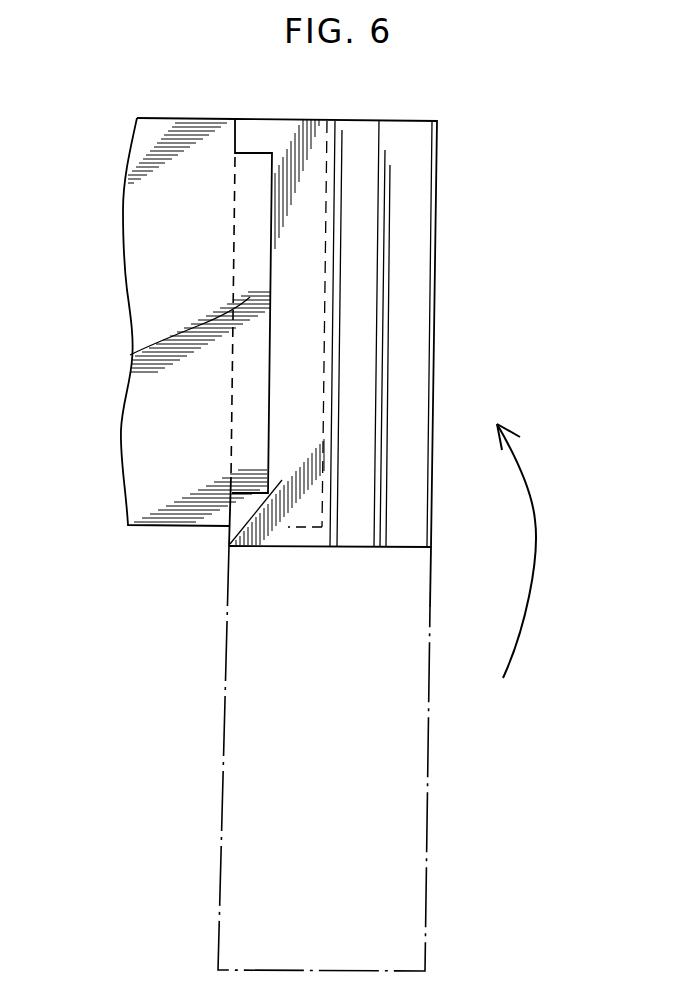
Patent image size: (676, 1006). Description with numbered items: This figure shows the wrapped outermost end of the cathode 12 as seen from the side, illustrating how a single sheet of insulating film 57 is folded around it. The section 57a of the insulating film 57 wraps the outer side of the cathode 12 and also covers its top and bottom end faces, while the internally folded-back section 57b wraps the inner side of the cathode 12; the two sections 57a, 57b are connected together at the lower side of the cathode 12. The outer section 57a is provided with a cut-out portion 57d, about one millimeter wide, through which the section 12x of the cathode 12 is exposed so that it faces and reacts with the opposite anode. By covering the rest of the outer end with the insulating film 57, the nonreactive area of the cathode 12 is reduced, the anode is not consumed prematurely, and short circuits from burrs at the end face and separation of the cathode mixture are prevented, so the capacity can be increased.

The cathode 12 is at (158, 113).
The section of the cathode 12x is at (130, 355).
The insulating film 57 is at (415, 152).
The section wrapping the outer side of the cathode 57a is at (229, 546).
The section wrapping the inner side of the cathode 57b is at (400, 705).
The cut-out portion 57d is at (252, 170).